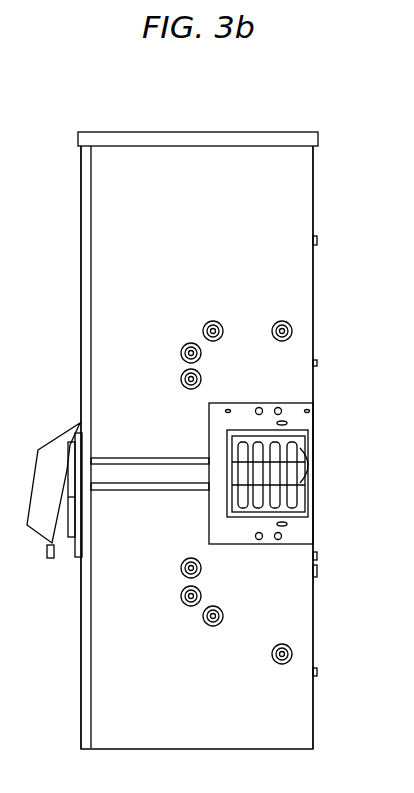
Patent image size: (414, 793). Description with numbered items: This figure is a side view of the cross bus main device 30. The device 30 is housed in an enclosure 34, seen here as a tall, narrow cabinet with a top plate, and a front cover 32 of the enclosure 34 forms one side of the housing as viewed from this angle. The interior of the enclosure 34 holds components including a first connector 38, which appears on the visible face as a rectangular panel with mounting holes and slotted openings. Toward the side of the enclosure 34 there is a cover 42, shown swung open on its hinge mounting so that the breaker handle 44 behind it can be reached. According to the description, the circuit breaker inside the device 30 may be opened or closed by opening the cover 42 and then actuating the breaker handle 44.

The device 30 is at (176, 112).
The front cover 32 is at (80, 183).
The enclosure 34 is at (314, 181).
The first connector 38 is at (300, 447).
The cover 42 is at (56, 448).
The breaker handle 44 is at (65, 510).